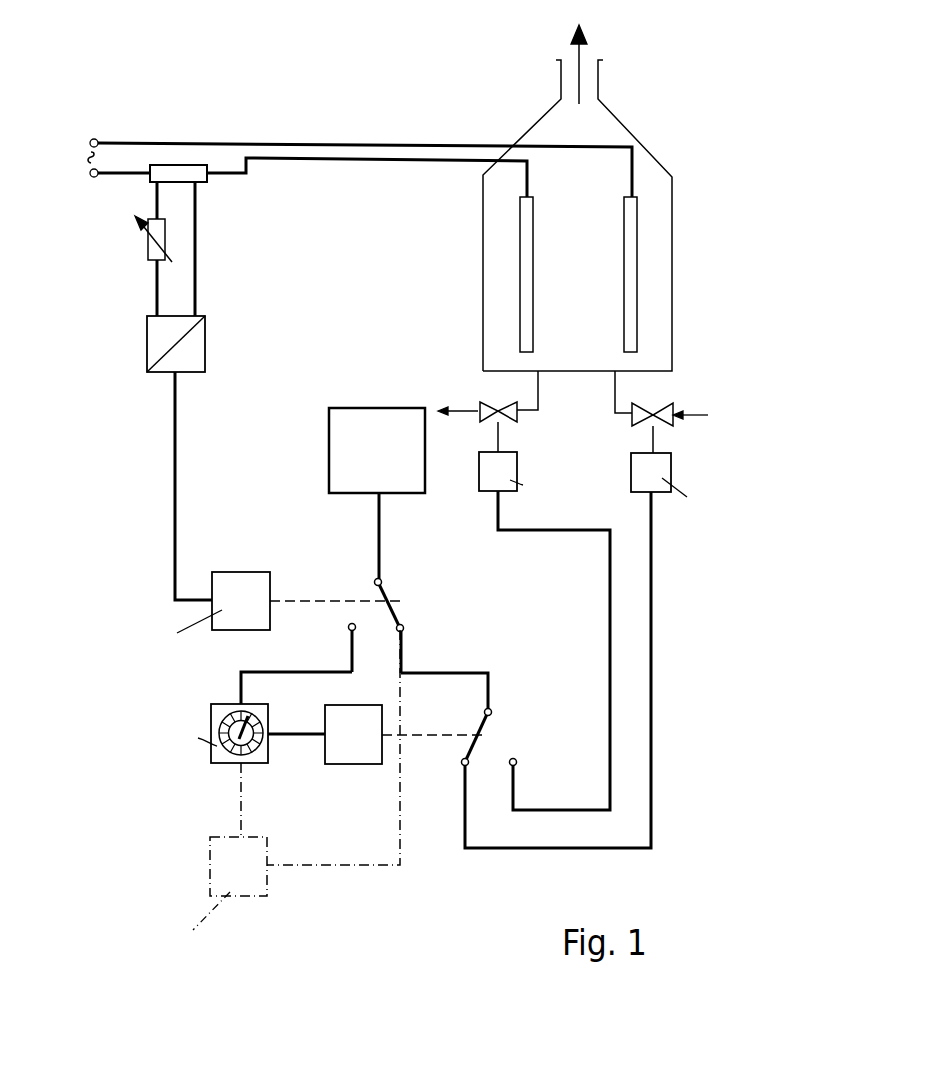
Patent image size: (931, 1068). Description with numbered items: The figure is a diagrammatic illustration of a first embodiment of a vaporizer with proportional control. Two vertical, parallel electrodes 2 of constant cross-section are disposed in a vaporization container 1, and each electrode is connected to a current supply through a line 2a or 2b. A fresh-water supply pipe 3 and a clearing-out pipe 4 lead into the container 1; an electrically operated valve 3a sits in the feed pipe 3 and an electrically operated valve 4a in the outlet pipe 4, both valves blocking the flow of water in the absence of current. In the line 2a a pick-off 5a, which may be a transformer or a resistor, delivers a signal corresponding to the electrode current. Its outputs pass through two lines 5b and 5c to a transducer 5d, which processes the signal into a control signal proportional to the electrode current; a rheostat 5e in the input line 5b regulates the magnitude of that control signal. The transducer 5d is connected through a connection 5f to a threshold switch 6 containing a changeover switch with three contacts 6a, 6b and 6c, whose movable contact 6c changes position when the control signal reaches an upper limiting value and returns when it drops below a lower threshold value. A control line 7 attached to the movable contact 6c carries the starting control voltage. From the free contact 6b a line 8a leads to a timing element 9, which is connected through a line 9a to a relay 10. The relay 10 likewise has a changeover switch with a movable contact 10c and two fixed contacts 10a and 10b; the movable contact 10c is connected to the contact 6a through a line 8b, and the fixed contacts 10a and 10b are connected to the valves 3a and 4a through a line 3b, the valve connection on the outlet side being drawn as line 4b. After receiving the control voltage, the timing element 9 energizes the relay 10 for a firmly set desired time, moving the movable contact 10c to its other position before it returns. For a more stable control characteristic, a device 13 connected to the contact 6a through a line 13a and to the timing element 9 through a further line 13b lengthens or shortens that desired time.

The vaporization container 1 is at (666, 219).
The electrodes 2 is at (528, 280).
The line 2a is at (415, 163).
The line 2b is at (431, 145).
The fresh-water supply pipe 3 is at (615, 395).
The electrically operated valve 3a is at (652, 435).
The line 3b is at (463, 843).
The clearing-out pipe 4 is at (540, 390).
The electrically operated valve 4a is at (498, 437).
The outlet valve control line 4b is at (525, 812).
The pick-off 5a is at (197, 178).
The line 5b is at (155, 285).
The line 5c is at (195, 273).
The transducer 5d is at (192, 348).
The rheostat 5e is at (148, 245).
The connection 5f is at (176, 447).
The threshold switch 6 is at (247, 583).
The contact 6a is at (405, 628).
The free contact 6b is at (348, 625).
The movable contact 6c is at (382, 582).
The control line 7 is at (380, 535).
The line 8a is at (251, 667).
The line 8b is at (480, 673).
The timing element 9 is at (218, 753).
The line 9a is at (292, 737).
The relay 10 is at (347, 755).
The fixed contact 10a is at (462, 763).
The fixed contact 10b is at (517, 762).
The movable contact 10c is at (492, 712).
The device 13 is at (252, 882).
The line 13a is at (317, 868).
The line 13b is at (238, 807).